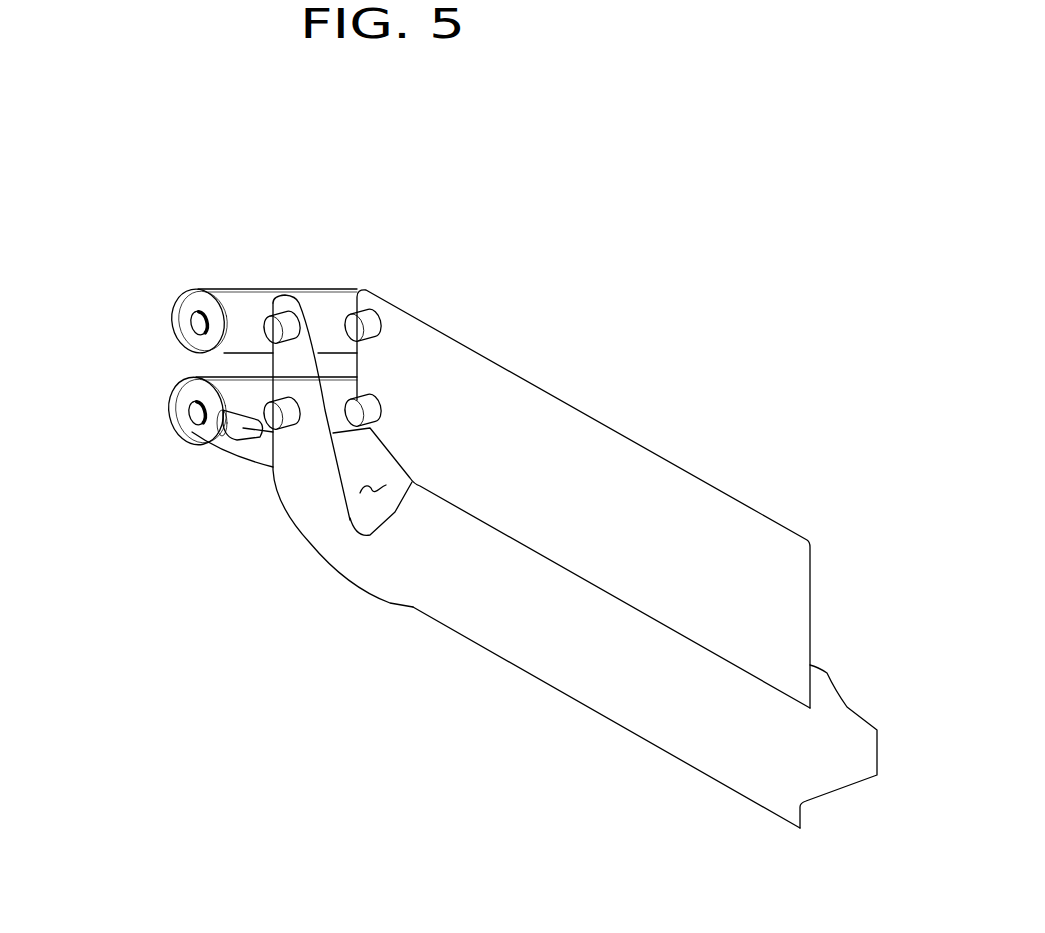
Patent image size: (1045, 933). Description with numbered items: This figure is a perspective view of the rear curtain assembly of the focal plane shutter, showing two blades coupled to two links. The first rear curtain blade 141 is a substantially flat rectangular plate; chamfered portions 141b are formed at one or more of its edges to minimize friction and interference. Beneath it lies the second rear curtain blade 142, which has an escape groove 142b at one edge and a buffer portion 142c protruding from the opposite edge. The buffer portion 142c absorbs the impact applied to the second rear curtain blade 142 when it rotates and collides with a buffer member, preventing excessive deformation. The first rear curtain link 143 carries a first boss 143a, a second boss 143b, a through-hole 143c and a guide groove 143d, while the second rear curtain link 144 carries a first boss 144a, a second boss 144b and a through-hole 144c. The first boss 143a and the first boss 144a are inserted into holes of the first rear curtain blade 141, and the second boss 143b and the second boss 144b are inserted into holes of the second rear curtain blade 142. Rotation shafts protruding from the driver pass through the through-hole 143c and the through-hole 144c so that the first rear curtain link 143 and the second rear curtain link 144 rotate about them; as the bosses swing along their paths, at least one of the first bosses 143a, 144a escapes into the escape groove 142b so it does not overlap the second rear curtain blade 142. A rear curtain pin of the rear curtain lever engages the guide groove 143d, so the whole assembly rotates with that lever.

The first rear curtain blade 141 is at (609, 471).
The chamfered portion 141b is at (392, 451).
The second rear curtain blade 142 is at (679, 752).
The escape groove 142b is at (375, 475).
The buffer portion 142c is at (845, 760).
The first rear curtain link 143 is at (192, 403).
The first boss 143a is at (358, 420).
The second boss 143b is at (267, 425).
The through-hole 143c is at (192, 406).
The guide groove 143d is at (208, 434).
The second rear curtain link 144 is at (200, 266).
The first boss 144a is at (368, 310).
The second boss 144b is at (283, 318).
The through-hole 144c is at (195, 322).